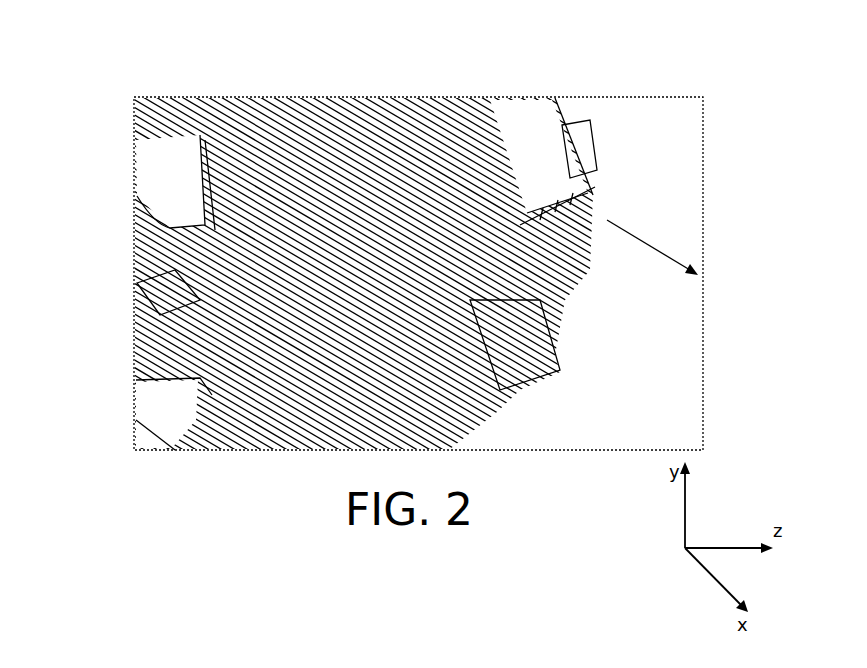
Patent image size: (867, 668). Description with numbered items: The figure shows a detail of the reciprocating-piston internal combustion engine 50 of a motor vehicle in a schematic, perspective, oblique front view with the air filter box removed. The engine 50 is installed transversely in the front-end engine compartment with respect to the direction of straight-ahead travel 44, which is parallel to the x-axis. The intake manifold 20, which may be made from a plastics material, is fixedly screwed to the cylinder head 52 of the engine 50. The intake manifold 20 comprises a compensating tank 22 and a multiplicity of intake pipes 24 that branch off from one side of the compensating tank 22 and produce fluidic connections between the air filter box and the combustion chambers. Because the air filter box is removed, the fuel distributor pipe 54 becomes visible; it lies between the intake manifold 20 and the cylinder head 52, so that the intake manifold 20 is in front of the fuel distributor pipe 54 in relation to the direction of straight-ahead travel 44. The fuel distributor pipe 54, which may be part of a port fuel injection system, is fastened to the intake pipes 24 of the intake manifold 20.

The reciprocating-piston internal combustion engine 50 is at (140, 62).
The intake manifold 20 is at (520, 162).
The cylinder head 52 is at (172, 172).
The fuel distributor pipe 54 is at (136, 290).
The intake pipes 24 is at (136, 365).
The compensating tank 22 is at (560, 322).
The direction of straight-ahead travel 44 is at (620, 228).